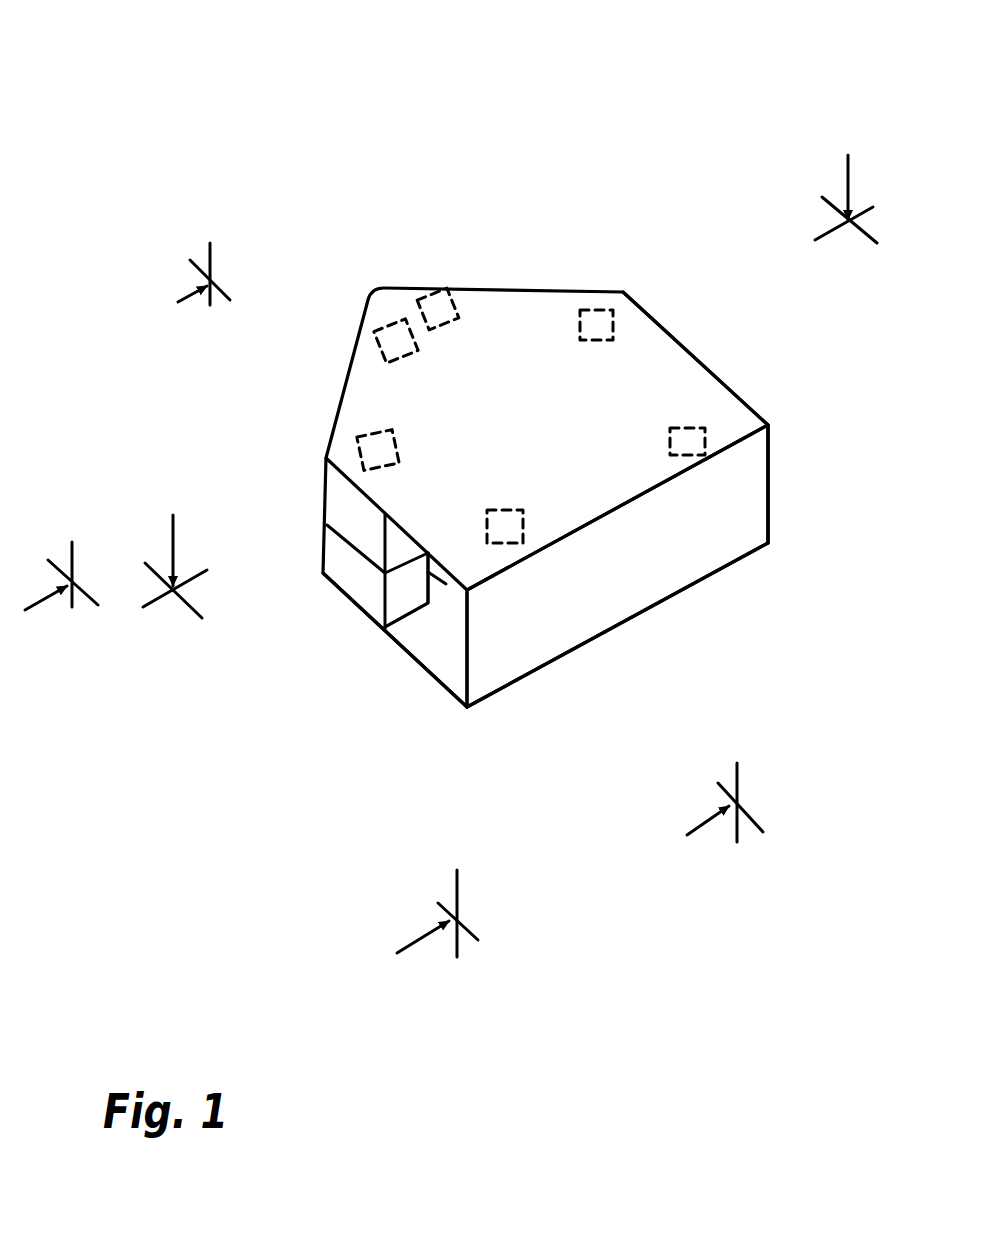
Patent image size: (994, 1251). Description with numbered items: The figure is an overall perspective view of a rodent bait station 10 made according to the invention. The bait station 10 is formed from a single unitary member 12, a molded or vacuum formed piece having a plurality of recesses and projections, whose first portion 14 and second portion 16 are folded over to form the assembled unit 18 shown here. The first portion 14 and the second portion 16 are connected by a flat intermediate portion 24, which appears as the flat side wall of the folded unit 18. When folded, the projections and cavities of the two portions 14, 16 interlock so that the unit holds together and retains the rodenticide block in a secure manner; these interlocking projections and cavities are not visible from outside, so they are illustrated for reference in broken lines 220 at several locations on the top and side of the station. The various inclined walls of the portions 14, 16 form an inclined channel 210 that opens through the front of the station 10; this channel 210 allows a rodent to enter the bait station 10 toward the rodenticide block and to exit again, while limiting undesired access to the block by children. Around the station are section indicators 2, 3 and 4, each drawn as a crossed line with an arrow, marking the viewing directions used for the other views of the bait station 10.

The rodent bait station 10 is at (754, 64).
The unitary member 12 is at (717, 378).
The first portion 14 is at (343, 588).
The second portion 16 is at (328, 490).
The assembled unit 18 is at (750, 418).
The flat intermediate portion 24 is at (727, 502).
The inclined channel 210 is at (433, 638).
The broken lines 220 is at (446, 306).
The section view indicator FIG. 2 is at (513, 384).
The section view indicator FIG. 3 is at (251, 771).
The section view indicator FIG. 4 is at (449, 563).